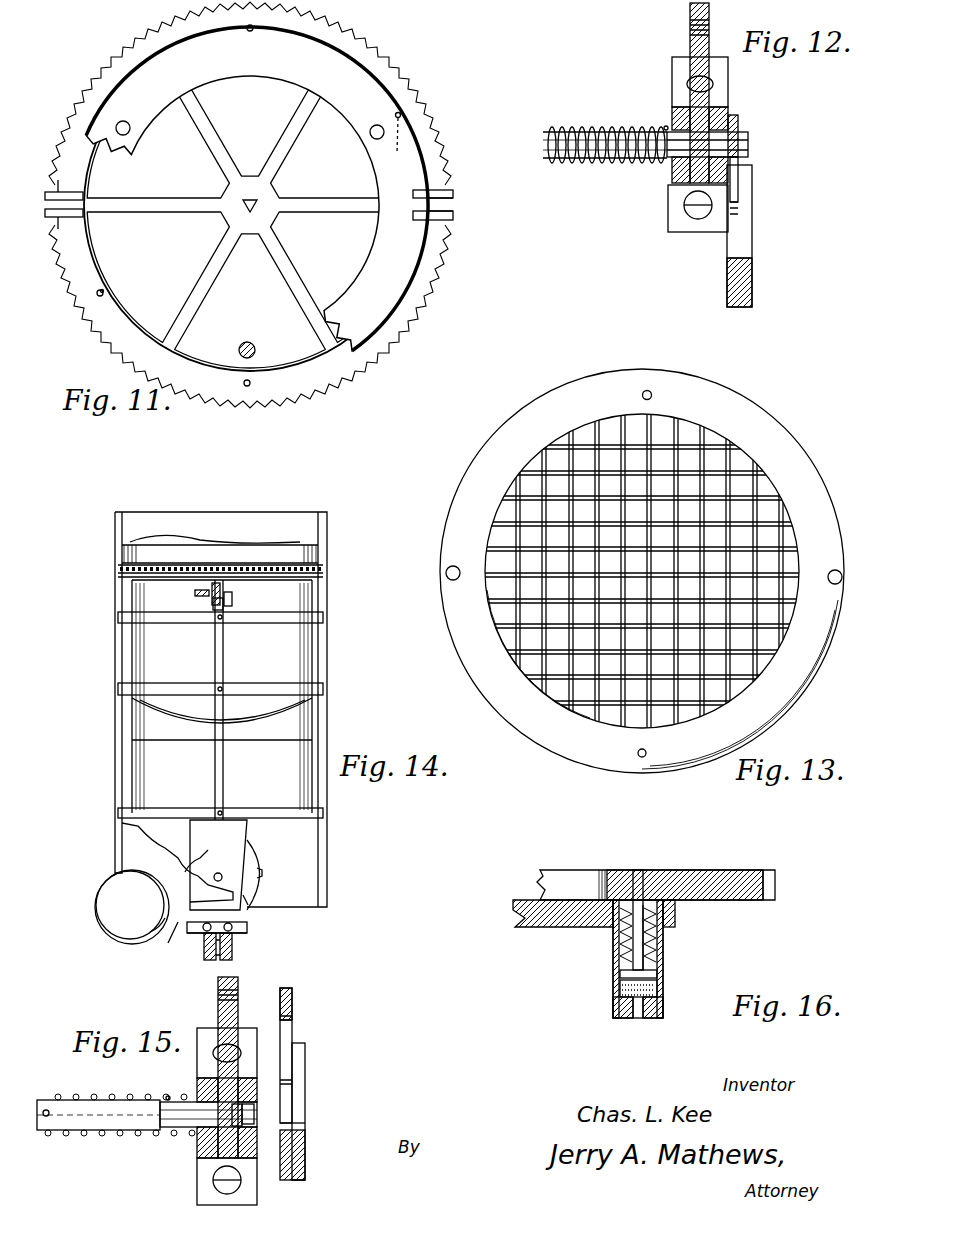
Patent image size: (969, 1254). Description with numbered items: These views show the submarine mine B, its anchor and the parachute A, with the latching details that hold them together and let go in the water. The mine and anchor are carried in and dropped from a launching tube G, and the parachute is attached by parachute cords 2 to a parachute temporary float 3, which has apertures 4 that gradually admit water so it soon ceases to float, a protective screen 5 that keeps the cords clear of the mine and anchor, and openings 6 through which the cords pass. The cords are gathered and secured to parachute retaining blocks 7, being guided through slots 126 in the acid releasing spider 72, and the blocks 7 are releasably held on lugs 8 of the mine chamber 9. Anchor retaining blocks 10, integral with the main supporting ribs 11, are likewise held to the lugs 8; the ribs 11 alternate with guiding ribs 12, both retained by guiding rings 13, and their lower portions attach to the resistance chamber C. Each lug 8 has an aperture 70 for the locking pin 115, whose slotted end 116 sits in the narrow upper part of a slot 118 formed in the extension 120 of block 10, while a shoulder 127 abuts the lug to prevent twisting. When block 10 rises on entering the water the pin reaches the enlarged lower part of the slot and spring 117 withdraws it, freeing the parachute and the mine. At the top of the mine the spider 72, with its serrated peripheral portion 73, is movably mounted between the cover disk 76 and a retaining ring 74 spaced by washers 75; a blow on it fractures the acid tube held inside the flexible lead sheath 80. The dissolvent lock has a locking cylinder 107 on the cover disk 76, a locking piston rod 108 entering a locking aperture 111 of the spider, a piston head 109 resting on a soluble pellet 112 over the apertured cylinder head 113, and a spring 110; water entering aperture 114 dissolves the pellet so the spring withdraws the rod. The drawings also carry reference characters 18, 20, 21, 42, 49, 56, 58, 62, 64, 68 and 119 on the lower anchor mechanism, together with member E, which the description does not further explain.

In FIG. 14, the parachute cords 2 is at (225, 565).
In FIG. 13, the parachute temporary float 3 is at (483, 685).
In FIG. 14, the parachute temporary float 3 is at (165, 563).
In FIG. 13, the apertures 4 is at (639, 756).
In FIG. 13, the protective screen 5 is at (542, 480).
In FIG. 13, the openings 6 is at (448, 581).
In FIG. 12, the parachute retaining blocks 7 is at (690, 14).
In FIG. 14, the parachute retaining blocks 7 is at (222, 590).
In FIG. 15, the parachute retaining blocks 7 is at (238, 1020).
In FIG. 11, the lugs 8 is at (453, 213).
In FIG. 12, the lugs 8 is at (672, 175).
In FIG. 15, the lugs 8 is at (200, 1150).
In FIG. 14, the mine chamber 9 is at (312, 708).
In FIG. 12, the anchor retaining blocks 10 is at (735, 310).
In FIG. 14, the anchor retaining blocks 10 is at (232, 604).
In FIG. 15, the anchor retaining blocks 10 is at (300, 1178).
In FIG. 14, the main supporting ribs 11 is at (215, 672).
In FIG. 11, the guiding ribs 12 is at (253, 30).
In FIG. 14, the guiding ribs 12 is at (120, 634).
In FIG. 14, the guiding rings 13 is at (248, 690).
In FIG. 14, the bracket 18 is at (238, 836).
In FIG. 14, the cam 20 is at (255, 857).
In FIG. 14, the notch 21 is at (262, 873).
In FIG. 14, the plate 42 is at (245, 935).
In FIG. 14, the sleeve 49 is at (233, 945).
In FIG. 14, the coupling 56 is at (204, 945).
In FIG. 14, the coupling pin 58 is at (218, 958).
In FIG. 14, the link 62 is at (168, 944).
In FIG. 14, the bar 64 is at (225, 913).
In FIG. 14, the lever arm 68 is at (190, 850).
In FIG. 14, the apertures 70 is at (213, 604).
In FIG. 15, the apertures 70 is at (246, 1112).
In FIG. 11, the acid releasing spider 72 is at (377, 65).
In FIG. 14, the acid releasing spider 72 is at (265, 565).
In FIG. 16, the acid releasing spider 72 is at (720, 880).
In FIG. 11, the serrated peripheral portion 73 is at (353, 32).
In FIG. 14, the serrated peripheral portion 73 is at (270, 565).
In FIG. 16, the serrated peripheral portion 73 is at (775, 885).
In FIG. 11, the retaining ring 74 is at (130, 72).
In FIG. 14, the retaining ring 74 is at (150, 563).
In FIG. 11, the washers 75 is at (254, 346).
In FIG. 14, the cover disk 76 is at (323, 577).
In FIG. 16, the cover disk 76 is at (545, 915).
In FIG. 11, the flexible lead sheath 80 is at (257, 205).
In FIG. 16, the locking cylinder 107 is at (665, 955).
In FIG. 11, the locking piston rod 108 is at (102, 290).
In FIG. 16, the locking piston rod 108 is at (660, 931).
In FIG. 16, the piston head 109 is at (620, 975).
In FIG. 16, the spring 110 is at (620, 952).
In FIG. 11, the locking apertures 111 is at (105, 293).
In FIG. 16, the locking apertures 111 is at (638, 870).
In FIG. 16, the soluble pellet 112 is at (620, 990).
In FIG. 16, the apertured cylinder head 113 is at (623, 1018).
In FIG. 16, the aperture 114 is at (638, 1018).
In FIG. 12, the locking pin 115 is at (748, 143).
In FIG. 14, the locking pin 115 is at (195, 592).
In FIG. 15, the locking pin 115 is at (243, 1120).
In FIG. 12, the slotted end 116 is at (738, 125).
In FIG. 15, the slotted end 116 is at (240, 1102).
In FIG. 12, the spring 117 is at (587, 128).
In FIG. 15, the spring 117 is at (120, 1136).
In FIG. 12, the slot 118 is at (738, 183).
In FIG. 15, the slot 118 is at (292, 1061).
In FIG. 12, the slot 119 is at (740, 194).
In FIG. 15, the slot 119 is at (300, 1080).
In FIG. 12, the extension 120 is at (745, 230).
In FIG. 15, the extension 120 is at (300, 1105).
In FIG. 11, the slots 126 is at (448, 193).
In FIG. 12, the shoulder 127 is at (672, 120).
In FIG. 15, the shoulder 127 is at (168, 1096).
In FIG. 13, the parachute A is at (730, 448).
In FIG. 14, the parachute A is at (190, 545).
In FIG. 11, the mine B is at (250, 205).
In FIG. 14, the mine B is at (179, 649).
In FIG. 14, the resistance chamber C is at (222, 763).
In FIG. 14, the member E is at (132, 907).
In FIG. 14, the launching tube G is at (327, 672).